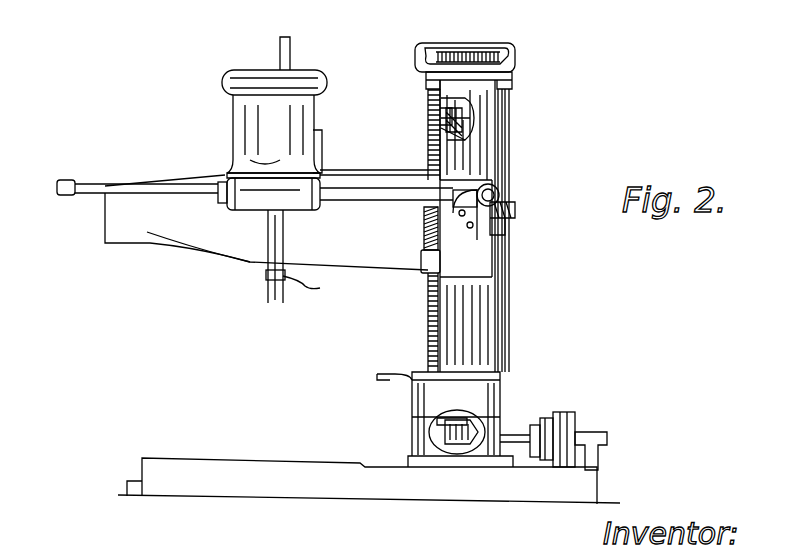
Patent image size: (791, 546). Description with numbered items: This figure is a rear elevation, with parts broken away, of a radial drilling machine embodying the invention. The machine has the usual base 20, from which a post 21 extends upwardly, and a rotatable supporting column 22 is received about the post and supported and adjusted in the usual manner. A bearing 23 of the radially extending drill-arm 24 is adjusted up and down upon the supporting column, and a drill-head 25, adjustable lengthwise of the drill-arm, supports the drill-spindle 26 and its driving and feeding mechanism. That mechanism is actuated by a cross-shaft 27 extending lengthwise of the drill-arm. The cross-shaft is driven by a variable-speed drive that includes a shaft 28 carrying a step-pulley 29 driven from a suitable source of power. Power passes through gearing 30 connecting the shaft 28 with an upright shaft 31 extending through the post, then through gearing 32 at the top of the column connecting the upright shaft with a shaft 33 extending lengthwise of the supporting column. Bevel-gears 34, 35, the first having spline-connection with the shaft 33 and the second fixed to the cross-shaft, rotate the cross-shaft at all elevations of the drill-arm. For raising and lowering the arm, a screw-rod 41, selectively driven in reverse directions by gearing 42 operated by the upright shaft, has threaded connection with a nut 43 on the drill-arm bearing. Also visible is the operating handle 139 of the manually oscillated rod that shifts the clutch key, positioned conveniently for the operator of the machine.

The base 20 is at (518, 498).
The post 21 is at (450, 132).
The supporting column 22 is at (484, 302).
The bearing 23 is at (480, 264).
The drill-arm 24 is at (366, 260).
The drill-head 25 is at (300, 126).
The drill-spindle 26 is at (284, 302).
The cross-shaft 27 is at (374, 198).
The shaft 28 is at (517, 434).
The step-pulley 29 is at (555, 420).
The gearing 30 is at (468, 442).
The upright shaft 31 is at (445, 100).
The gearing 32 is at (488, 56).
The shaft 33 is at (507, 116).
The bevel-gear 34 is at (514, 208).
The bevel-gear 35 is at (495, 188).
The screw-rod 41 is at (430, 320).
The gearing 42 is at (450, 52).
The nut 43 is at (430, 178).
The operating handle 139 is at (308, 289).